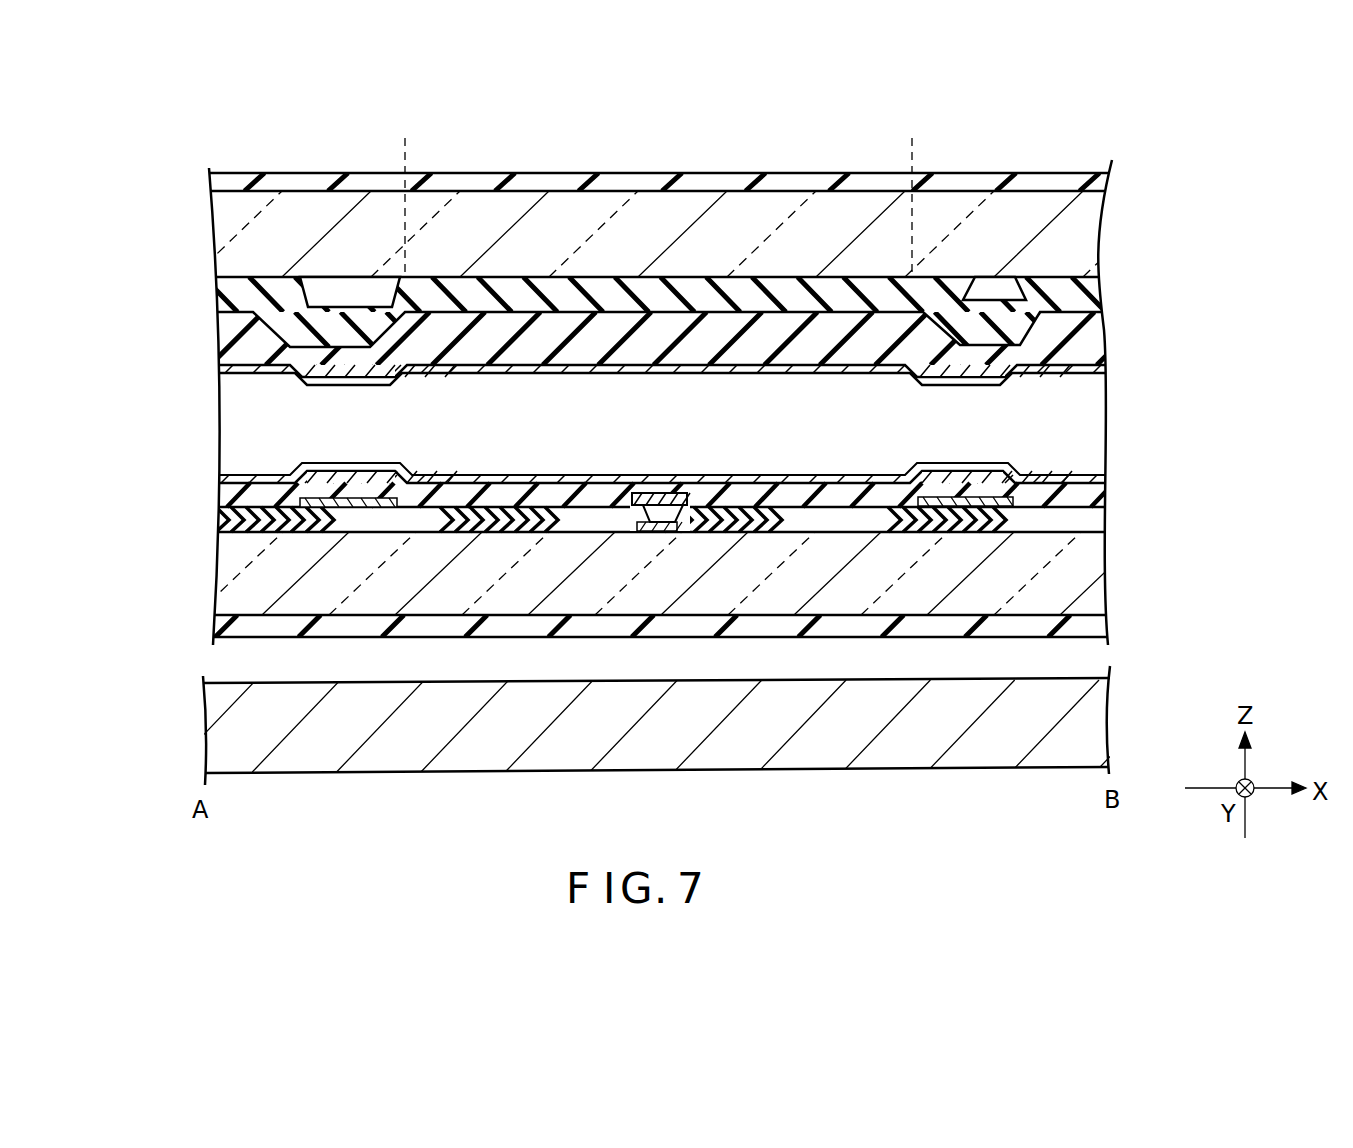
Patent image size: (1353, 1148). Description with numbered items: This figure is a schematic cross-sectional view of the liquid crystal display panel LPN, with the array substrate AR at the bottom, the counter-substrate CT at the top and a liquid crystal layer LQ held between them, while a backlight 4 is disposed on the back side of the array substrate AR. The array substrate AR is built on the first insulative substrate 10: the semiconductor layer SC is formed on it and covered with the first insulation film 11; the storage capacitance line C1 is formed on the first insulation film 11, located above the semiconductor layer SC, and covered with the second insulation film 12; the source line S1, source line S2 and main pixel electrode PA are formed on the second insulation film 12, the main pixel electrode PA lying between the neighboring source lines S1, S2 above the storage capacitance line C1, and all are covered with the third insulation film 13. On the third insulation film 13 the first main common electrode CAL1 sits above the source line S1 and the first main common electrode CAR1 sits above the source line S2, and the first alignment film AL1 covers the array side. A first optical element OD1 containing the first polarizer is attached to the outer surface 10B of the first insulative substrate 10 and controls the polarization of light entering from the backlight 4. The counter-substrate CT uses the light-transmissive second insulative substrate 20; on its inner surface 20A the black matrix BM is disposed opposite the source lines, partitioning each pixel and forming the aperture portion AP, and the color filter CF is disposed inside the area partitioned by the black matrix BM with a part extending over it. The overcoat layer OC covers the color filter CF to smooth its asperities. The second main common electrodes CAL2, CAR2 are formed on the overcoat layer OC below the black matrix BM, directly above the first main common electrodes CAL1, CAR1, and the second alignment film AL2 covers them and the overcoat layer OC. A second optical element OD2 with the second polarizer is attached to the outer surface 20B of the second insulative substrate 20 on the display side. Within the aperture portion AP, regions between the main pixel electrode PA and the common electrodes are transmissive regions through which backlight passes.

The second insulative substrate 20 is at (1094, 228).
The inner surface of the second insulative substrate 20A is at (232, 290).
The outer surface of the second insulative substrate 20B is at (286, 182).
The second optical element OD2 is at (232, 187).
The black matrix BM is at (362, 293).
The color filter CF is at (1094, 294).
The overcoat layer OC is at (1094, 334).
The second alignment film AL2 is at (1088, 372).
The counter-substrate CT is at (212, 258).
The second main common electrode CAL2 is at (345, 380).
The second main common electrode CAR2 is at (940, 380).
The liquid crystal layer LQ is at (232, 437).
The first alignment film AL1 is at (1055, 474).
The first main common electrode CAL1 is at (360, 478).
The first main common electrode CAR1 is at (978, 476).
The main pixel electrode PA is at (665, 494).
The storage capacitance line C1 is at (672, 521).
The semiconductor layer SC is at (647, 531).
The source line S1 is at (362, 508).
The source line S2 is at (965, 507).
The third insulation film 13 is at (1092, 492).
The second insulation film 12 is at (1092, 508).
The first insulation film 11 is at (1092, 522).
The first insulative substrate 10 is at (1092, 578).
The outer surface of the first insulative substrate 10B is at (249, 634).
The first optical element OD1 is at (232, 628).
The array substrate AR is at (212, 590).
The aperture portion AP is at (912, 136).
The liquid crystal display panel LPN is at (1122, 167).
The backlight 4 is at (1094, 716).